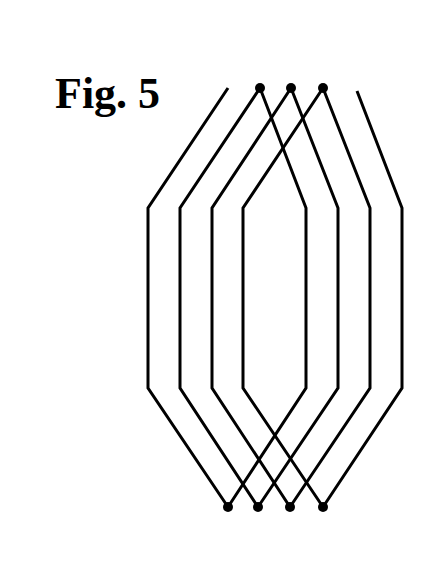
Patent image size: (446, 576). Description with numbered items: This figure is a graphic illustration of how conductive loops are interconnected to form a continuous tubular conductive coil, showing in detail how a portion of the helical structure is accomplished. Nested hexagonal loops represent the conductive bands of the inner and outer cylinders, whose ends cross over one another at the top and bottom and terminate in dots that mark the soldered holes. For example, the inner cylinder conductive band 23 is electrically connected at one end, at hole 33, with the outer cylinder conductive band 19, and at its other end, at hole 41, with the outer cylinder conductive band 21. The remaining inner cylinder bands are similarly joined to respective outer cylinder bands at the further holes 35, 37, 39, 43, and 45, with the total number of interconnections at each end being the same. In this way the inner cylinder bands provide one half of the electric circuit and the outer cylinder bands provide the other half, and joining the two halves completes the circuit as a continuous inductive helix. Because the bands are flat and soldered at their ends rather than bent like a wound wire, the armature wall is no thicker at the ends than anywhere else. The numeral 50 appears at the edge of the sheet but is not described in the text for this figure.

The outer cylinder conductive band 19 is at (305, 245).
The outer cylinder conductive band 21 is at (337, 300).
The inner cylinder conductive band 23 is at (203, 173).
The hole 33 is at (260, 82).
The terminal 35 is at (292, 82).
The terminal 37 is at (325, 82).
The terminal 39 is at (222, 507).
The hole 41 is at (258, 513).
The terminal 43 is at (290, 513).
The terminal 45 is at (323, 513).
The coil 50 is at (52, 570).